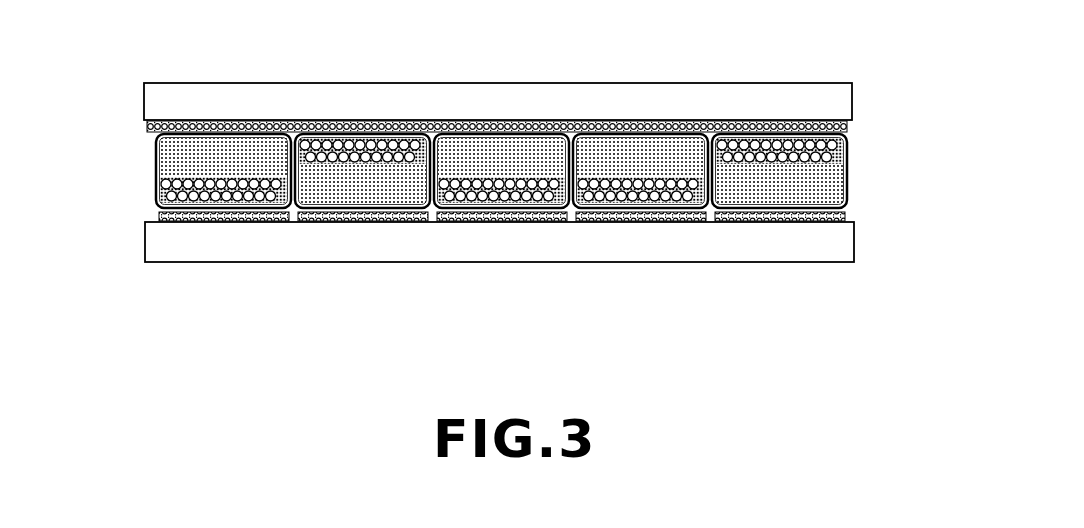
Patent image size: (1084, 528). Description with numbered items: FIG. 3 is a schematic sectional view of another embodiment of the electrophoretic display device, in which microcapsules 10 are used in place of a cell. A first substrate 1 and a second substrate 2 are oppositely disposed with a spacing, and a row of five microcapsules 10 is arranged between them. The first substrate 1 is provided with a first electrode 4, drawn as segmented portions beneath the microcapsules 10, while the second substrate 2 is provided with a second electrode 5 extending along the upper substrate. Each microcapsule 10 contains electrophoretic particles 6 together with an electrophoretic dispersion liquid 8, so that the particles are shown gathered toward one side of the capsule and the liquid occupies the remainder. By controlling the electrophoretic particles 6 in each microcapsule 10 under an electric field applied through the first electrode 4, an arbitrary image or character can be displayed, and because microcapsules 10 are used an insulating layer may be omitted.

The first substrate 1 is at (388, 262).
The second substrate 2 is at (768, 83).
The first electrode 4 is at (338, 223).
The second electrode 5 is at (852, 122).
The electrophoretic particles 6 is at (212, 180).
The electrophoretic dispersion liquid 8 is at (257, 150).
The microcapsules 10 is at (150, 170).